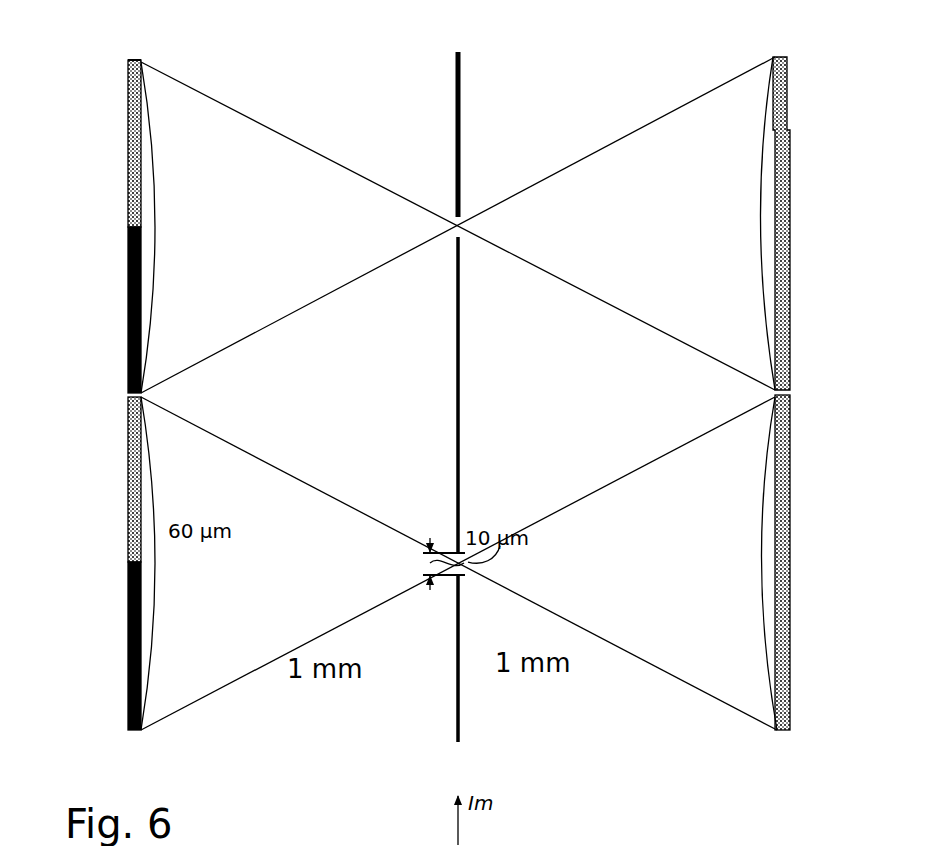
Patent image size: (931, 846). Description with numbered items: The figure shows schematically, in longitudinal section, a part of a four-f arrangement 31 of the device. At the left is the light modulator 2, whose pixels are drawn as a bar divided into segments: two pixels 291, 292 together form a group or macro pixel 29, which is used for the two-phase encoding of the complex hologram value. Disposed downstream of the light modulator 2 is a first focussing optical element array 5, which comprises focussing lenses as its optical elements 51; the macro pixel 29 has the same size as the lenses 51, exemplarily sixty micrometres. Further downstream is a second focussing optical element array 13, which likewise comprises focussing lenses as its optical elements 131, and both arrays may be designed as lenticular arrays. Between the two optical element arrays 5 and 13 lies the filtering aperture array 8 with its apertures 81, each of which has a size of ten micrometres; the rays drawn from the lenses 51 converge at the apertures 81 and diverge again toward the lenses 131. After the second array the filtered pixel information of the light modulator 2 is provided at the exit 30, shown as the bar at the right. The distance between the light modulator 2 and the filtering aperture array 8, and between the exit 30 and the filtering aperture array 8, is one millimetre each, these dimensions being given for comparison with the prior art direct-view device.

The light modulator 2 is at (133, 59).
The macro pixel 29 is at (98, 395).
The pixel 291 is at (129, 336).
The pixel 292 is at (136, 135).
The first focussing optical element array 5 is at (175, 396).
The optical element 51 is at (152, 262).
The filtering aperture array 8 is at (461, 397).
The aperture 81 is at (463, 238).
The second focussing optical element array 13 is at (738, 393).
The optical element 131 is at (768, 170).
The exit 30 is at (809, 378).
The 4f arrangement 31 is at (796, 62).